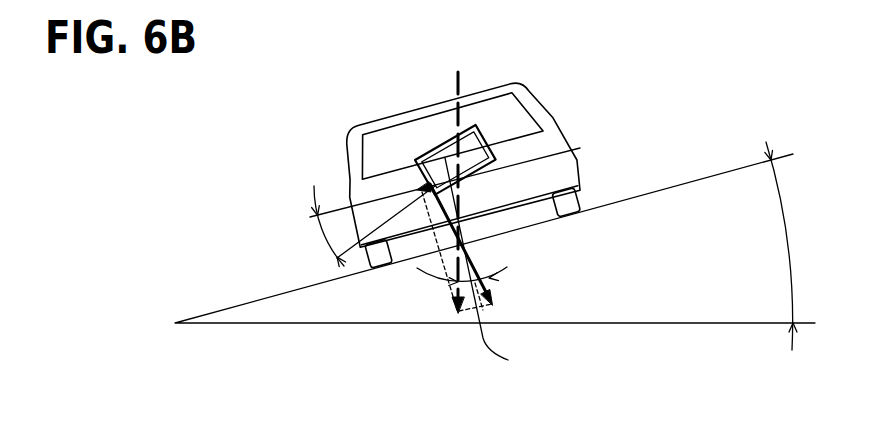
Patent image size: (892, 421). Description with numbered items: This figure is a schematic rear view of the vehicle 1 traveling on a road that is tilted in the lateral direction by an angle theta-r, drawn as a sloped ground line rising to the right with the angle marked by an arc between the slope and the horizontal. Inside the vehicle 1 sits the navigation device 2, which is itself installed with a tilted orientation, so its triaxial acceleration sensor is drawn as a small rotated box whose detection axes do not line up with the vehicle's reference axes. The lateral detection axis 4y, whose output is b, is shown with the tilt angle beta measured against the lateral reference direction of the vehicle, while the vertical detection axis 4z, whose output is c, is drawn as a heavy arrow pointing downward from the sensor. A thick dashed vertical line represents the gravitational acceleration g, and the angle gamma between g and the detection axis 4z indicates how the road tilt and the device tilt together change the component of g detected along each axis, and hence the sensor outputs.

The vehicle 1 is at (557, 132).
The navigation device 2 is at (440, 140).
The detection axis 4y is at (415, 160).
The detection axis 4z is at (467, 254).
The gravitational acceleration g is at (457, 256).